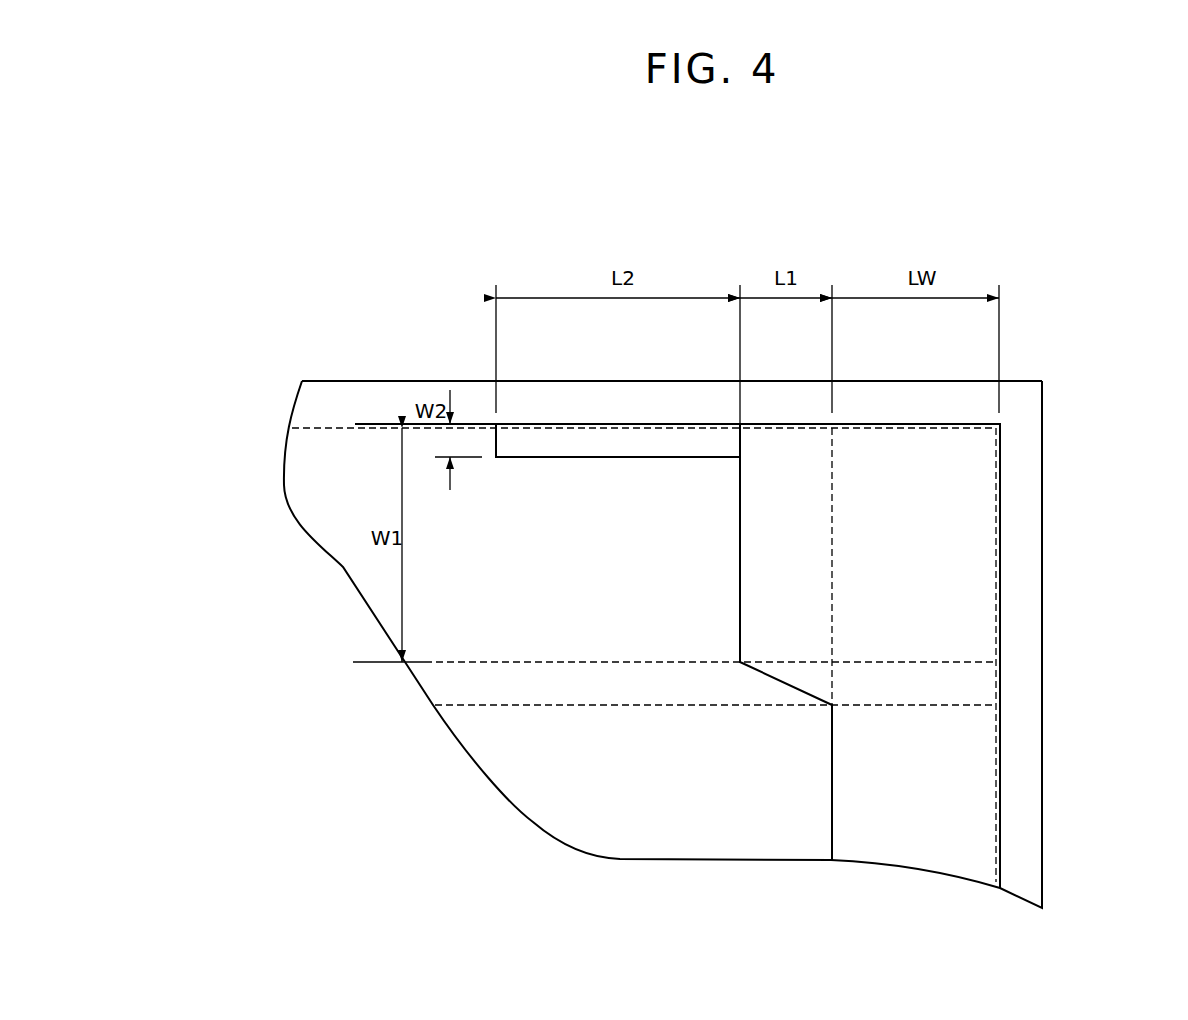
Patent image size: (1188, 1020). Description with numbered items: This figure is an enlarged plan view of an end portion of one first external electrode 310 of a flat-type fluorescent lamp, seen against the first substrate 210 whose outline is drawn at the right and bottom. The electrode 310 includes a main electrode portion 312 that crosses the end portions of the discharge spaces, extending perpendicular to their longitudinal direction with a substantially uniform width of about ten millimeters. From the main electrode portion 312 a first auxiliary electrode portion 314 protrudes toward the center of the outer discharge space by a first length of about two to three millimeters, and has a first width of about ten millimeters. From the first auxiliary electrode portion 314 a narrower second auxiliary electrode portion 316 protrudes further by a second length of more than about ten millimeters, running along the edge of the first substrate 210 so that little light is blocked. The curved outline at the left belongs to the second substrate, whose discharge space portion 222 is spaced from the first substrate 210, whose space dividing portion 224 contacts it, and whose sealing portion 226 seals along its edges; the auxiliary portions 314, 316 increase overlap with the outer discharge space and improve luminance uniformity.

The first substrate 210 is at (1042, 656).
The discharge space portion 222 is at (317, 497).
The space dividing portion 224 is at (455, 681).
The sealing portion 226 is at (317, 395).
The first external electrode 310 is at (1000, 515).
The main electrode portion 312 is at (922, 445).
The first auxiliary electrode portion 314 is at (777, 445).
The second auxiliary electrode portion 316 is at (620, 445).